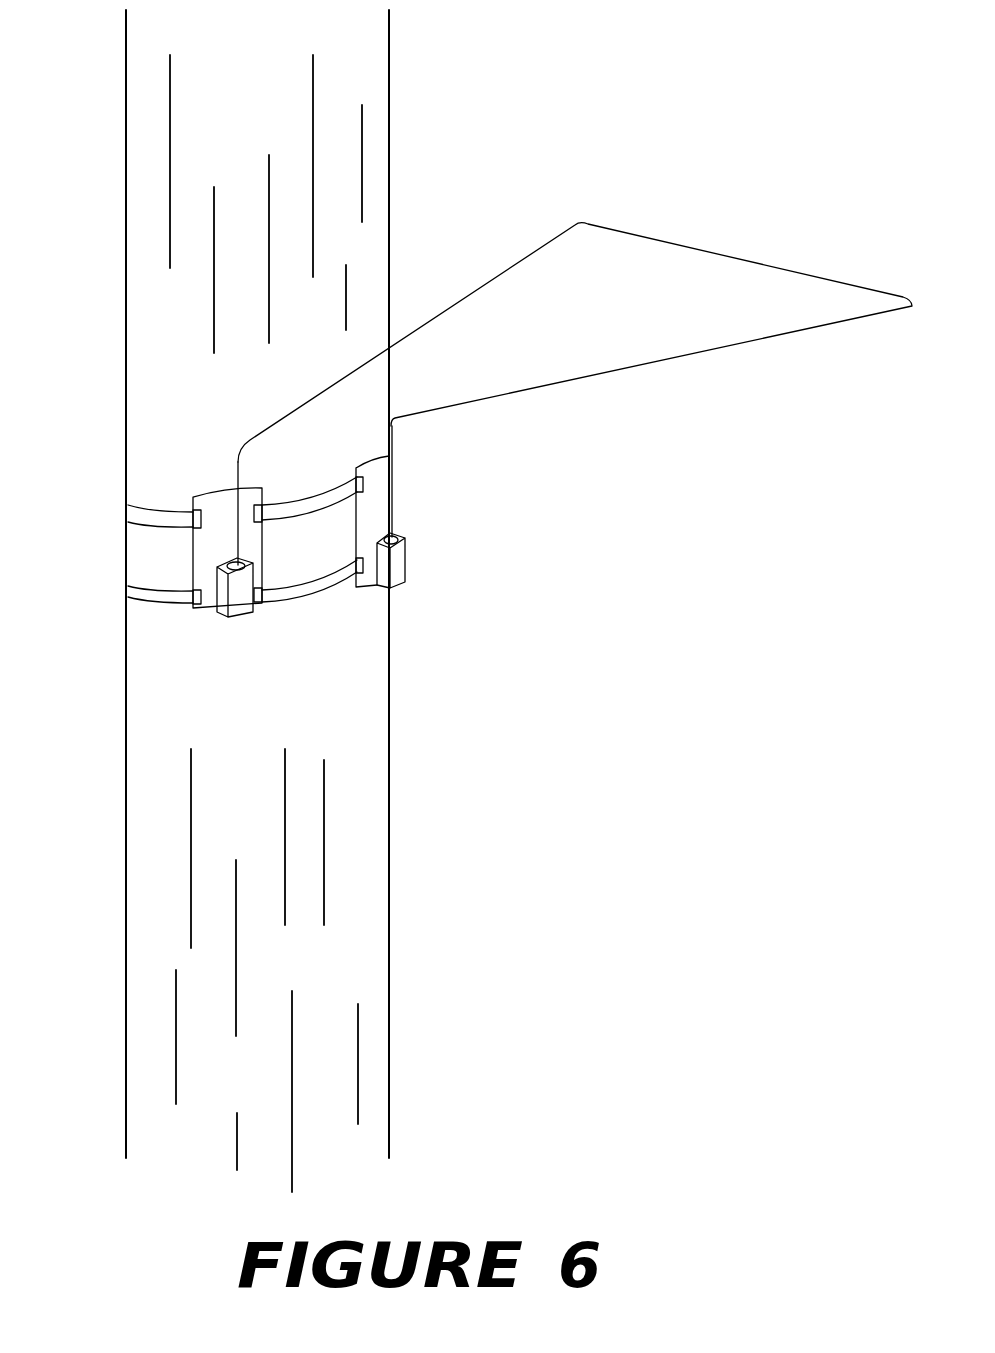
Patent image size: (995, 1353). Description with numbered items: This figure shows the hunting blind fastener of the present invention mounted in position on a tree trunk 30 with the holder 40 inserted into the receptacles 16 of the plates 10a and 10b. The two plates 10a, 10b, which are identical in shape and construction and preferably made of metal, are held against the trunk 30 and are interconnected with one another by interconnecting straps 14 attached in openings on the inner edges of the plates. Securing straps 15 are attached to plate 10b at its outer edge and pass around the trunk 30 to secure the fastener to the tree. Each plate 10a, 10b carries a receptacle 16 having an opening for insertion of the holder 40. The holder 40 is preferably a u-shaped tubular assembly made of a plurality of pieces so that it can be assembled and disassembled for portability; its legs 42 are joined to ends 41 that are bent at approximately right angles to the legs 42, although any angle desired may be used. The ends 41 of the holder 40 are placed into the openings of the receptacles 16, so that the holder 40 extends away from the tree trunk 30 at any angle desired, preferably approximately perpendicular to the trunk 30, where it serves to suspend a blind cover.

The tree trunk 30 is at (270, 116).
The holder 40 is at (575, 334).
The legs 42 is at (477, 290).
The ends 41 is at (238, 527).
The plate 10a is at (410, 484).
The plate 10b is at (195, 632).
The securing straps 15 is at (128, 515).
The interconnecting straps 14 is at (304, 503).
The receptacle 16 is at (238, 608).